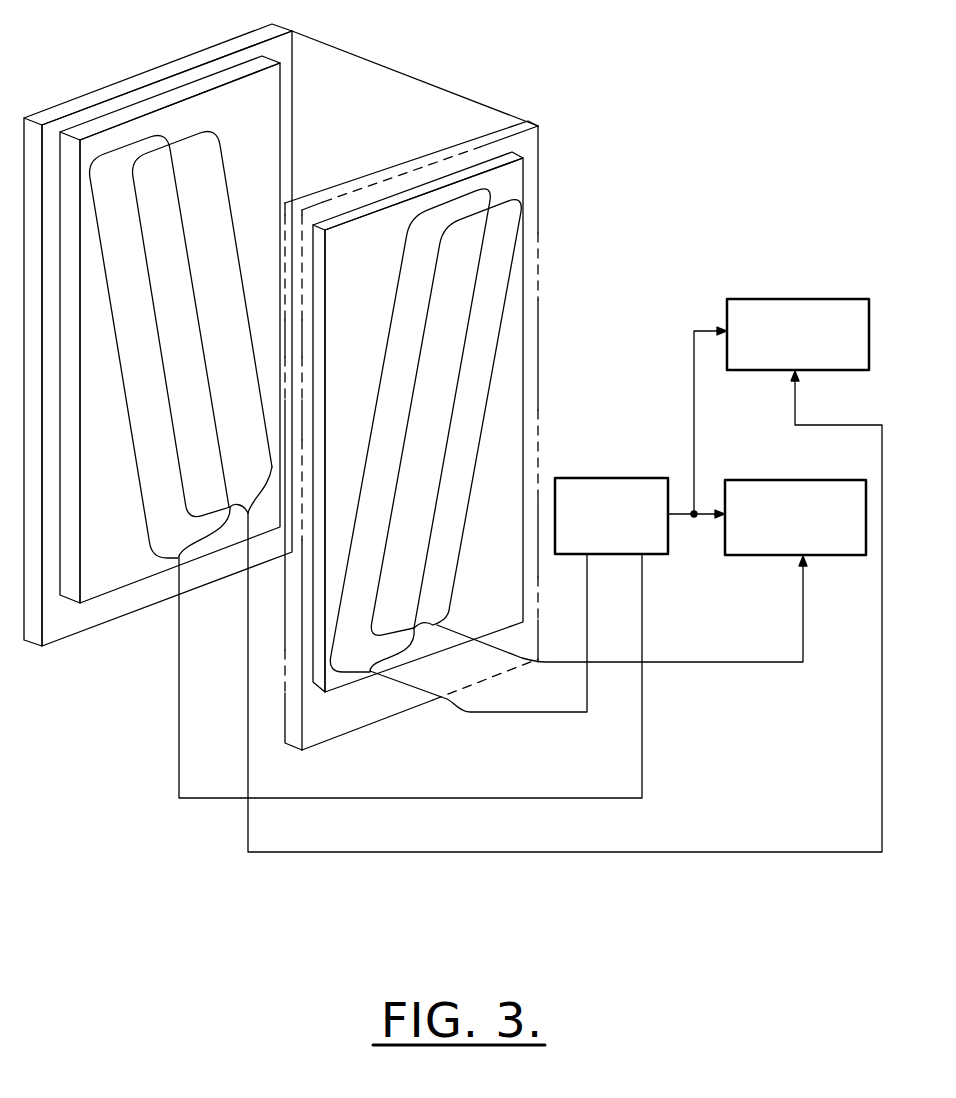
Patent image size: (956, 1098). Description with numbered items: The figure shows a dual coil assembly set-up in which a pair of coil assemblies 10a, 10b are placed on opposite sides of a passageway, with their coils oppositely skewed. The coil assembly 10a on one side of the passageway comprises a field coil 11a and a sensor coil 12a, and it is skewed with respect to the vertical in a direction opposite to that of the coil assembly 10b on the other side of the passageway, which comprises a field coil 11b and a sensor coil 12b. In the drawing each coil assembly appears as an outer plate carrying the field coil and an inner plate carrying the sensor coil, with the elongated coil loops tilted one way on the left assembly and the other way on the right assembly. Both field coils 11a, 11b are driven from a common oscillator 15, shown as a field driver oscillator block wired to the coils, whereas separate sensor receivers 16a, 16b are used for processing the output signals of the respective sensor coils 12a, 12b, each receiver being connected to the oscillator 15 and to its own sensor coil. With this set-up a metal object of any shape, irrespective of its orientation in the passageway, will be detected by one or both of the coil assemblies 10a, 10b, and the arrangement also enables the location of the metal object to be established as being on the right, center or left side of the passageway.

The coil assembly 10a is at (107, 621).
The coil assembly 10b is at (409, 714).
The field coil 11a is at (113, 147).
The field coil 11b is at (394, 311).
The sensor coil 12a is at (224, 172).
The sensor coil 12b is at (510, 285).
The oscillator 15 is at (612, 478).
The sensor receiver 16a is at (785, 299).
The sensor receiver 16b is at (783, 480).